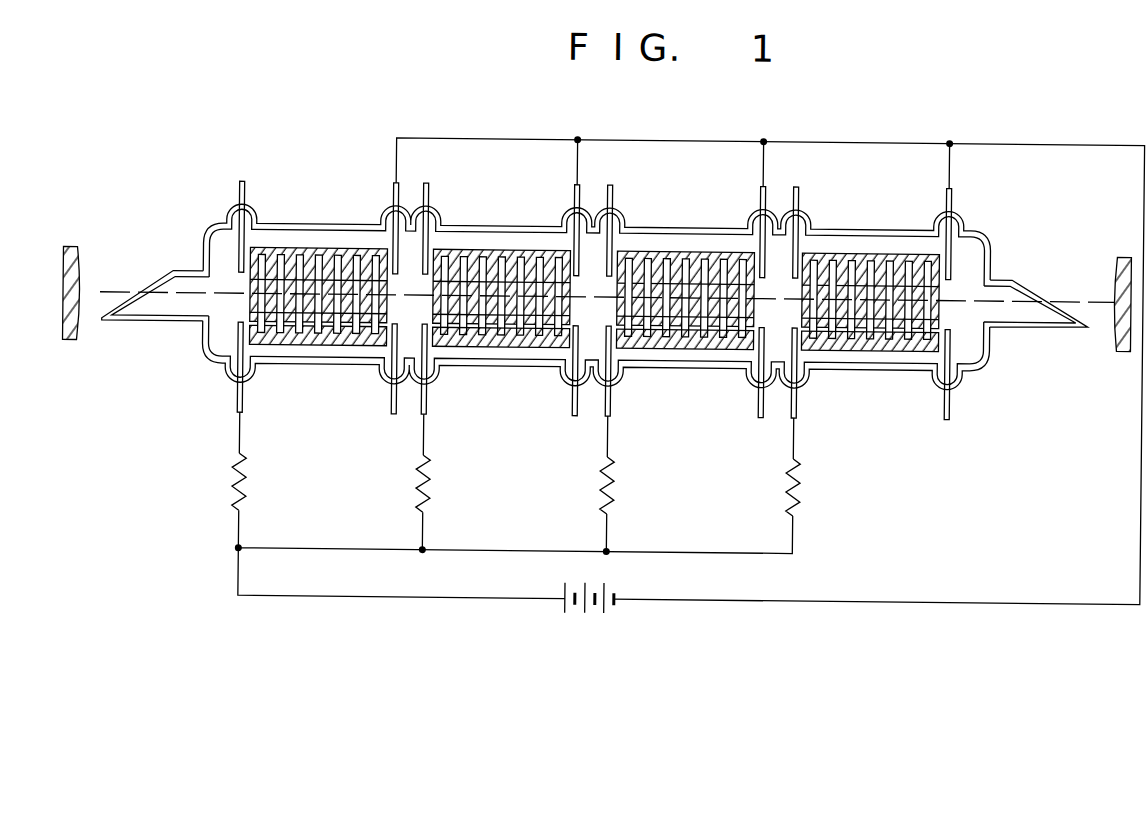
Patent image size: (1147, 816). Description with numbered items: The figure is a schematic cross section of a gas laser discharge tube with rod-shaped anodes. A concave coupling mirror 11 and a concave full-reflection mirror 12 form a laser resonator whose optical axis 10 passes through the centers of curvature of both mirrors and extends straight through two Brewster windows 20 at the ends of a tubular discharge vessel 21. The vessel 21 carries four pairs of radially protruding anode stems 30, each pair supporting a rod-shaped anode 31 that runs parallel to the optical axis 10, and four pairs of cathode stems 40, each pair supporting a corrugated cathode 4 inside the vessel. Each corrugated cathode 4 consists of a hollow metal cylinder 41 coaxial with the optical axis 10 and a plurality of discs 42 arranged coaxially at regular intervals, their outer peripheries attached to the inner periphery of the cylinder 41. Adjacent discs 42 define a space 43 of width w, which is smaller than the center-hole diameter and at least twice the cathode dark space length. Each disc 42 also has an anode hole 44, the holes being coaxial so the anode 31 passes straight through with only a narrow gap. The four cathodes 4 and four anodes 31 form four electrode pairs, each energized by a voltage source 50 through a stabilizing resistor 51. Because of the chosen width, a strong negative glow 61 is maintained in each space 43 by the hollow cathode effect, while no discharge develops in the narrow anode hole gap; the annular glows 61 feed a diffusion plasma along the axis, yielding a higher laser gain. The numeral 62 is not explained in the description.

The corrugated cathode 4 is at (315, 250).
The optical axis 10 is at (97, 294).
The concave coupling mirror 11 is at (73, 253).
The concave full-reflection mirror 12 is at (1122, 250).
The Brewster window 20 is at (160, 288).
The tubular discharge vessel 21 is at (203, 357).
The anode stem 30 is at (237, 404).
The rod-shaped anode 31 is at (537, 344).
The cathode stem 40 is at (243, 194).
The hollow metal cylinder 41 is at (430, 255).
The disc 42 is at (832, 265).
The space 43 is at (665, 269).
The anode hole 44 is at (917, 340).
The voltage source 50 is at (592, 614).
The stabilizing resistor 51 is at (248, 487).
The negative glow 61 is at (687, 319).
The insulating spacer 62 is at (833, 321).